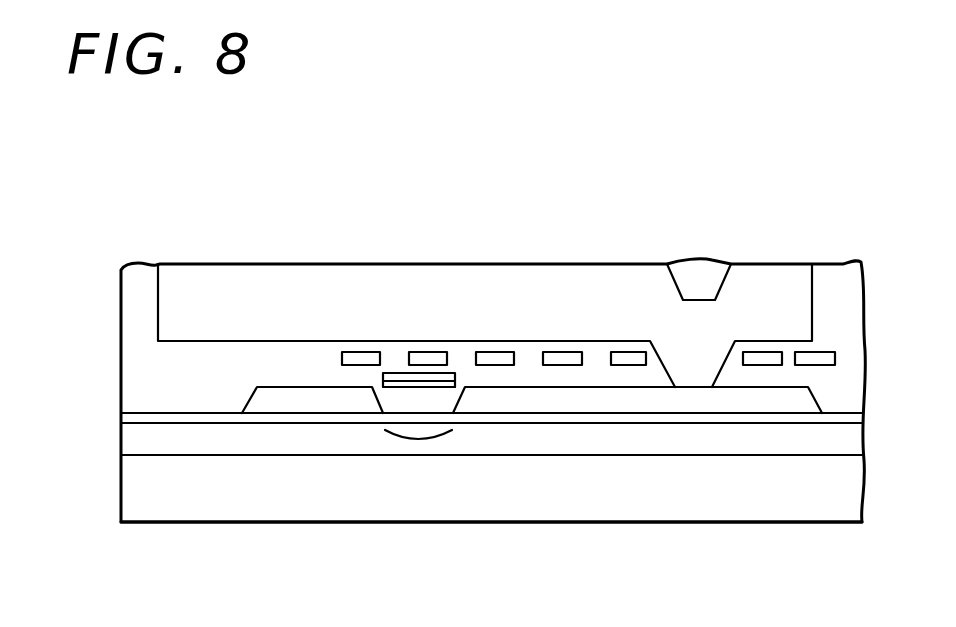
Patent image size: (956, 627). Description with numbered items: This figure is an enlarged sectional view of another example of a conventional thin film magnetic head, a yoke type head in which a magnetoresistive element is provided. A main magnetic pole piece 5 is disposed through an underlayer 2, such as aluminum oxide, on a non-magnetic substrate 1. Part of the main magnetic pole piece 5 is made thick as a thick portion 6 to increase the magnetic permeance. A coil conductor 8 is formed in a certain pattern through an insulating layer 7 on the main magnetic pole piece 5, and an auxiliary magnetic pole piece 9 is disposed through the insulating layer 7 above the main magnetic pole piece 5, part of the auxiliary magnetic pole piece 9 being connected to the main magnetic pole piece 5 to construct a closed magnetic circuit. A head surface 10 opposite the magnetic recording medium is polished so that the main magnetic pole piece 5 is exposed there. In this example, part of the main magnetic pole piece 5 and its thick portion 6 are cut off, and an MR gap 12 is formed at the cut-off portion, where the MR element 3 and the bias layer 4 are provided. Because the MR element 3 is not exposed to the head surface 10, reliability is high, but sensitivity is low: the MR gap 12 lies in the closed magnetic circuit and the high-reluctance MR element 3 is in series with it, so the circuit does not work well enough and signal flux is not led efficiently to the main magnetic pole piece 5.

The non-magnetic substrate 1 is at (362, 508).
The underlayer 2 is at (677, 440).
The MR element 3 is at (438, 387).
The bias layer 4 is at (397, 372).
The main magnetic pole piece 5 is at (223, 424).
The thick portion of the main magnetic pole piece 6 is at (741, 401).
The insulating layer 7 is at (217, 360).
The coil conductor 8 is at (493, 350).
The auxiliary magnetic pole piece 9 is at (743, 282).
The head surface 10 is at (121, 470).
The MR gap 12 is at (423, 441).